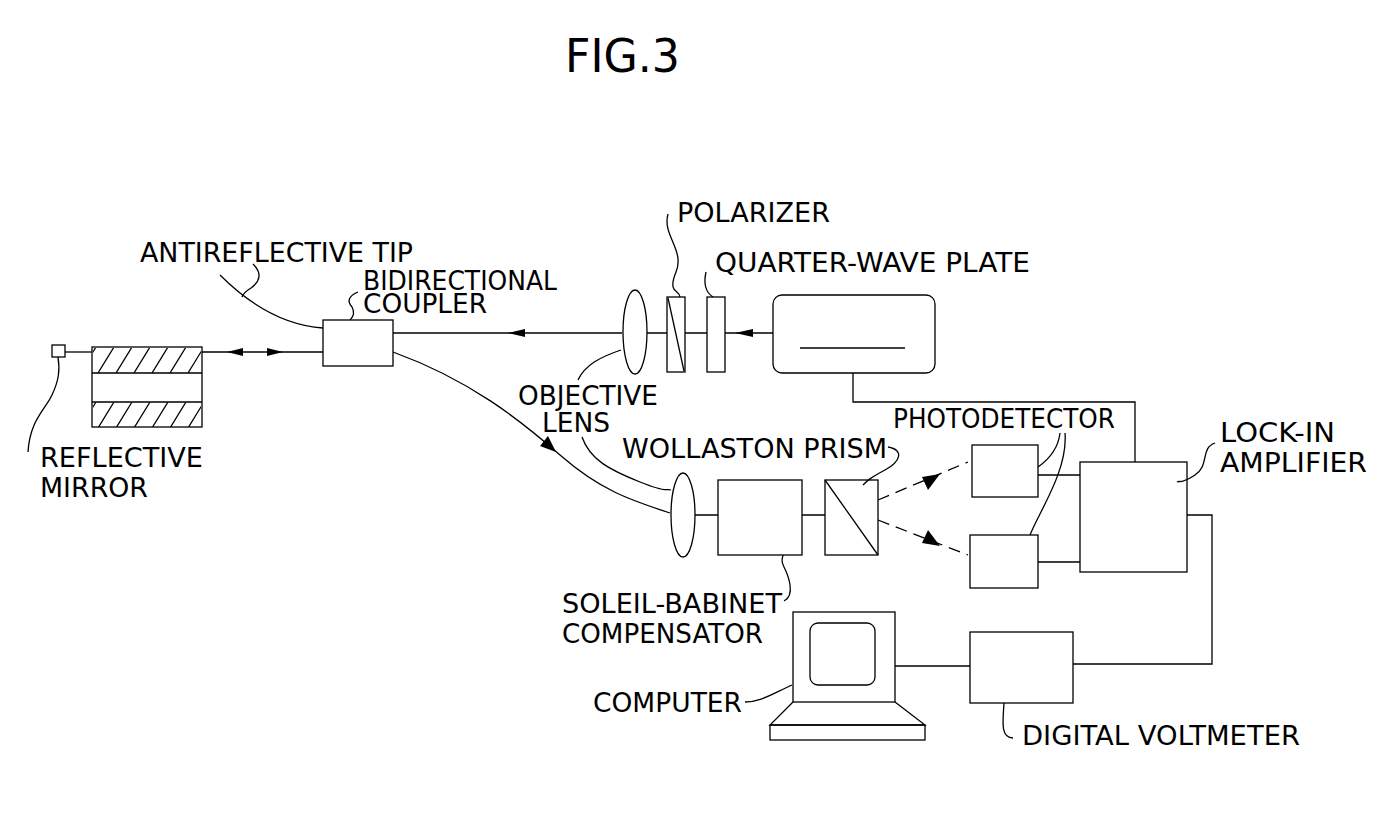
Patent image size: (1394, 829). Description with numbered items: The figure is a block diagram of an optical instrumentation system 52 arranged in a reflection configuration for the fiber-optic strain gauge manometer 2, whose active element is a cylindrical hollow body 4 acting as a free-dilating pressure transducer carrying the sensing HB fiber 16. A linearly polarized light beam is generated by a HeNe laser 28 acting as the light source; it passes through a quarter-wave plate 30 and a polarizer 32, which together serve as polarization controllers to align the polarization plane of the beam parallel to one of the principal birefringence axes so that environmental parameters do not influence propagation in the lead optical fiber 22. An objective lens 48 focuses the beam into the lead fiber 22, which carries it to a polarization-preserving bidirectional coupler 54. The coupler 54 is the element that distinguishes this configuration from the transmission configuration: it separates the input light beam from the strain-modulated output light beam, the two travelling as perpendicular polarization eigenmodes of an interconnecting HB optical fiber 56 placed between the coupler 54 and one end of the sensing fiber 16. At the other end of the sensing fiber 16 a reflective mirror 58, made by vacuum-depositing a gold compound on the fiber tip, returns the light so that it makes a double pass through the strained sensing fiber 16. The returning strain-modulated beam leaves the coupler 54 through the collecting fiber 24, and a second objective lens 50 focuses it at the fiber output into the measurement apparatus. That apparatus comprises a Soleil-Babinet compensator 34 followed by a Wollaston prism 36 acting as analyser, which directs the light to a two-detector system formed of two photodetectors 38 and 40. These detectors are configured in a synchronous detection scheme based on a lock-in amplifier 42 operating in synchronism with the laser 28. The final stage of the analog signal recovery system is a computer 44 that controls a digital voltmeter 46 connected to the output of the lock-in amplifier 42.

The fiber-optic strain gauge manometer 2 is at (224, 430).
The cylindrical hollow body 4 is at (202, 354).
The sensing HB fiber 16 is at (181, 347).
The lead optical fiber 22 is at (593, 333).
The collecting fiber 24 is at (518, 413).
The HeNe laser 28 is at (927, 331).
The quarter-wave plate 30 is at (727, 358).
The polarizer 32 is at (707, 392).
The Soleil-Babinet compensator 34 is at (778, 530).
The Wollaston prism 36 is at (837, 555).
The photodetector 38 is at (1017, 490).
The photodetector 40 is at (1025, 580).
The lock-in amplifier 42 is at (1148, 525).
The computer 44 is at (863, 672).
The digital voltmeter 46 is at (1033, 687).
The objective lens 48 is at (653, 291).
The objective lens 50 is at (671, 540).
The optical instrumentation system 52 is at (1050, 323).
The polarization-preserving bidirectional coupler 54 is at (370, 352).
The interconnecting HB optical fiber 56 is at (317, 358).
The reflective mirror 58 is at (88, 332).